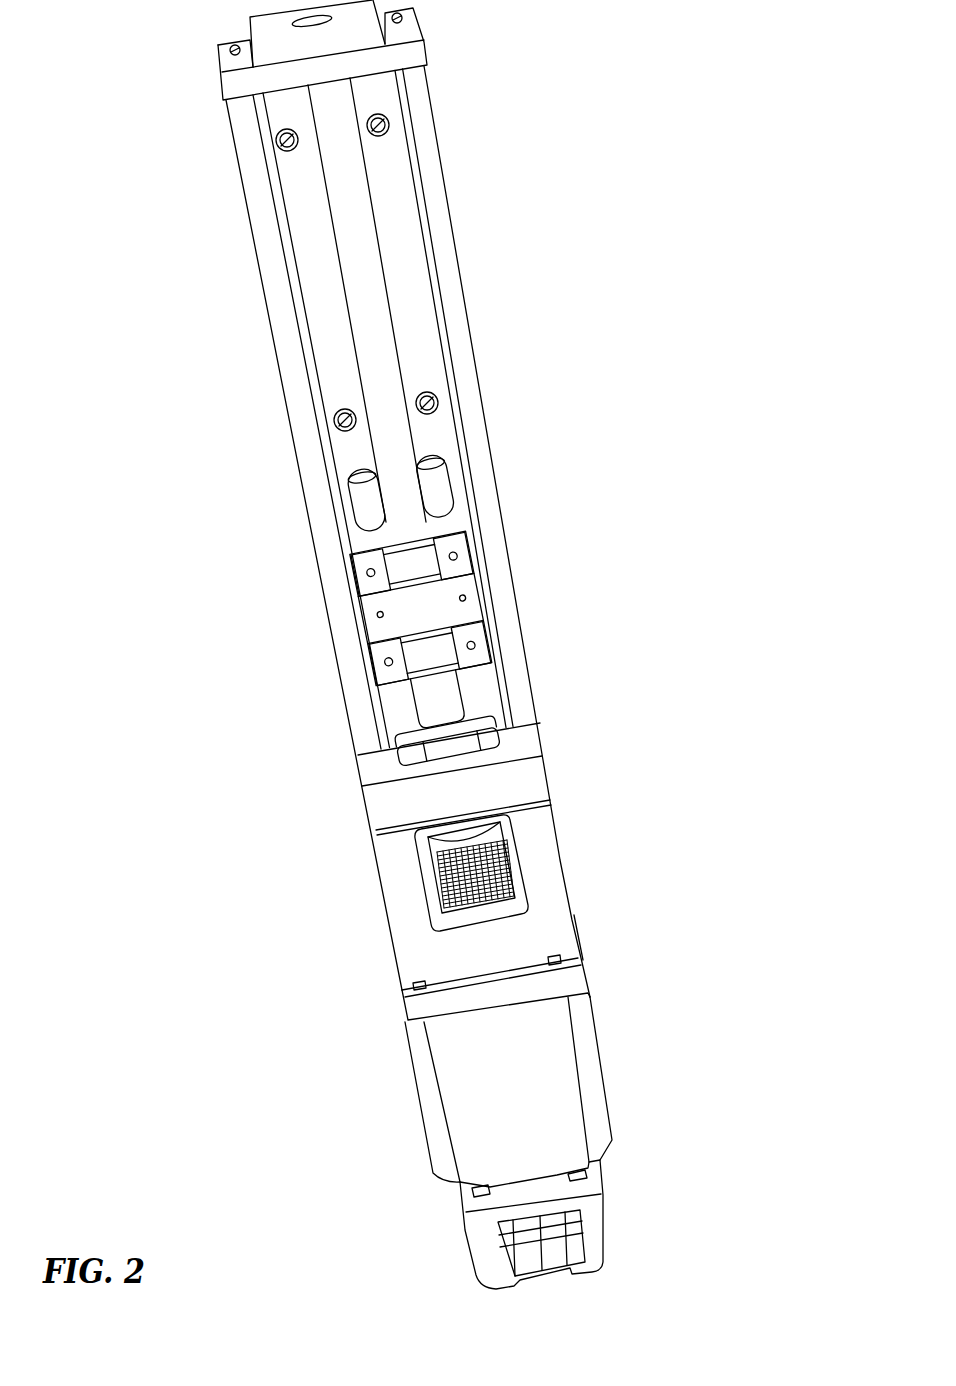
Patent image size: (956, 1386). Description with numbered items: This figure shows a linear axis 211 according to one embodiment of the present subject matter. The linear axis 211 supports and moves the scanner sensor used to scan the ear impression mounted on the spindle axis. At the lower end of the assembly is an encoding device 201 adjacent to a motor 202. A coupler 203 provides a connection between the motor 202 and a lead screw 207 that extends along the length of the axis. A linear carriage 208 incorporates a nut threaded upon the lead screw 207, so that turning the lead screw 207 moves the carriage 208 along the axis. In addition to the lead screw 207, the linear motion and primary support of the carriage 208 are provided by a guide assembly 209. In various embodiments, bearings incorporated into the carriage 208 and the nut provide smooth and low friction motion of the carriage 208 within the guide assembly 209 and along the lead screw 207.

The linear axis 211 is at (481, 77).
The guide assembly 209 is at (402, 237).
The lead screw 207 is at (373, 342).
The linear carriage 208 is at (440, 599).
The coupler 203 is at (420, 872).
The motor 202 is at (472, 1082).
The encoding device 201 is at (473, 1210).